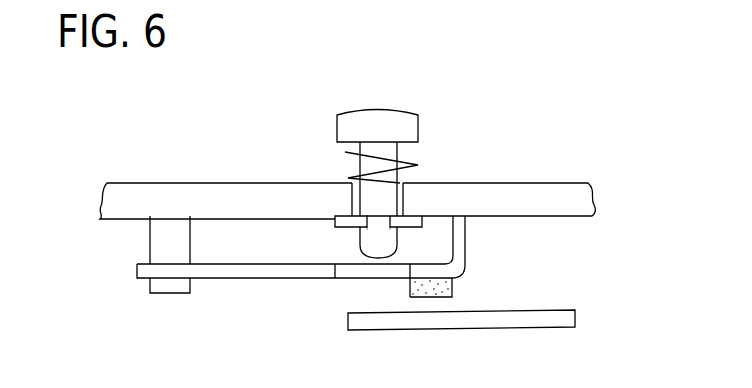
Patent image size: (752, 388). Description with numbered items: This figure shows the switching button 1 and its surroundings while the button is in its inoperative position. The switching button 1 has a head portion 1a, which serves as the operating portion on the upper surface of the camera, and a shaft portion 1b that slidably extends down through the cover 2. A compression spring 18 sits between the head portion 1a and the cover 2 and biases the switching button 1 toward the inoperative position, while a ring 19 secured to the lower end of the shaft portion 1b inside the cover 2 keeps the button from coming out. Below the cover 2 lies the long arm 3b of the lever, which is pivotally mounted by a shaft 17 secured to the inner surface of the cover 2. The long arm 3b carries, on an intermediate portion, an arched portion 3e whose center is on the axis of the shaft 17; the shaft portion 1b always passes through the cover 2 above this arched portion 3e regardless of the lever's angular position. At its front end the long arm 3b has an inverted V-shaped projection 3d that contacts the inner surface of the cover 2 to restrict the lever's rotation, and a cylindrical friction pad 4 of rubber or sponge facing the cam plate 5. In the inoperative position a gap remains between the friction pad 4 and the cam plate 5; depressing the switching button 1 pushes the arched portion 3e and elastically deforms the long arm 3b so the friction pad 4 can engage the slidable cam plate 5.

The switching button 1 is at (364, 145).
The head portion 1a is at (372, 117).
The shaft portion 1b is at (367, 202).
The cover 2 is at (508, 192).
The long arm 3b is at (238, 278).
The projection 3d is at (467, 233).
The arched portion 3e is at (370, 275).
The friction pad 4 is at (433, 297).
The cam plate 5 is at (523, 325).
The shaft 17 is at (162, 237).
The compression spring 18 is at (345, 153).
The ring 19 is at (340, 232).